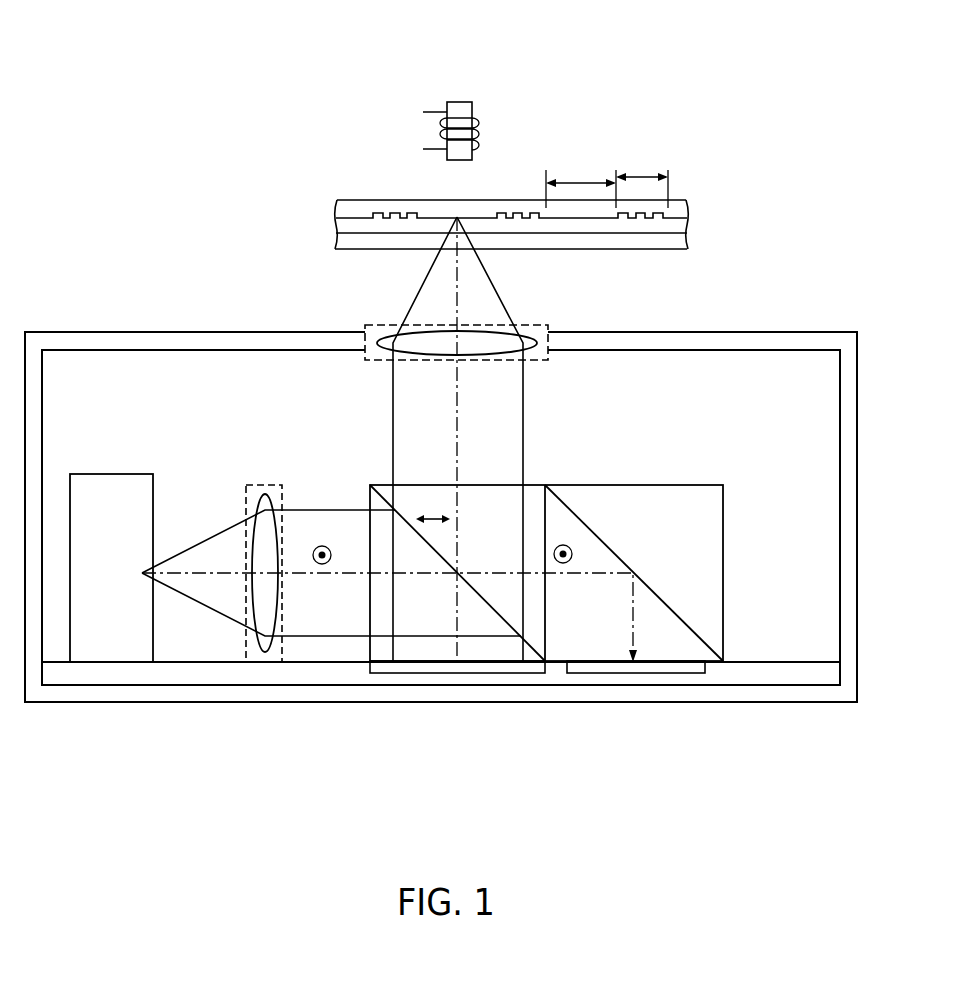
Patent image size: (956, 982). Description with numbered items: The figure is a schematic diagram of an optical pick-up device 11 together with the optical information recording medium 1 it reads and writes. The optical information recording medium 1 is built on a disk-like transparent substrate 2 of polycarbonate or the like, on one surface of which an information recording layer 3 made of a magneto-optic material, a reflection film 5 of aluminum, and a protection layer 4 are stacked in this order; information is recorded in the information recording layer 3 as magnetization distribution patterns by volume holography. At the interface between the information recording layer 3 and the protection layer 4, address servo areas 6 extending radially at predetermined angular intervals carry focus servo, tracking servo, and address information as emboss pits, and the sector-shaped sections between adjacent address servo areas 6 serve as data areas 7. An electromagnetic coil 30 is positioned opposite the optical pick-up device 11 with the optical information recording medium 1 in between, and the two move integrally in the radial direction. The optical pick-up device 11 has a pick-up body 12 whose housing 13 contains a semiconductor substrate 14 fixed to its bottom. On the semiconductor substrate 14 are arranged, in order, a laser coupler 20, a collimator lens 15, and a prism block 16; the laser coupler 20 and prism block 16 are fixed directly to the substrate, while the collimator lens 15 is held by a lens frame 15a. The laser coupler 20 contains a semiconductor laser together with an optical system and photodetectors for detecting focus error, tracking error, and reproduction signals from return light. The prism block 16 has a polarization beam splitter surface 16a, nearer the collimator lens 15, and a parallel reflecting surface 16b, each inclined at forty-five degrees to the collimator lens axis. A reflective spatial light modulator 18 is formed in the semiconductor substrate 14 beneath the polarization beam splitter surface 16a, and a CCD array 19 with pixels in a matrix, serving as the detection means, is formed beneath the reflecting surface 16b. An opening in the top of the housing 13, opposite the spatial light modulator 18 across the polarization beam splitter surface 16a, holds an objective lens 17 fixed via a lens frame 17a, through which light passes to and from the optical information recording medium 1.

The optical information recording medium 1 is at (684, 180).
The transparent substrate 2 is at (688, 238).
The information recording layer 3 is at (687, 220).
The protection layer 4 is at (684, 208).
The reflection film 5 is at (597, 219).
The address servo area 6 is at (645, 177).
The data area 7 is at (583, 183).
The optical pick-up device 11 is at (164, 286).
The pick-up body 12 is at (80, 326).
The housing 13 is at (66, 701).
The semiconductor substrate 14 is at (193, 678).
The collimator lens 15 is at (262, 655).
The lens frame 15a is at (285, 657).
The prism block 16 is at (658, 477).
The polarization beam splitter surface 16a is at (493, 612).
The reflecting surface 16b is at (665, 610).
The objective lens 17 is at (488, 337).
The lens frame 17a is at (385, 325).
The spatial light modulator 18 is at (428, 668).
The CCD array 19 is at (604, 668).
The laser coupler 20 is at (120, 655).
The electromagnetic coil 30 is at (458, 98).